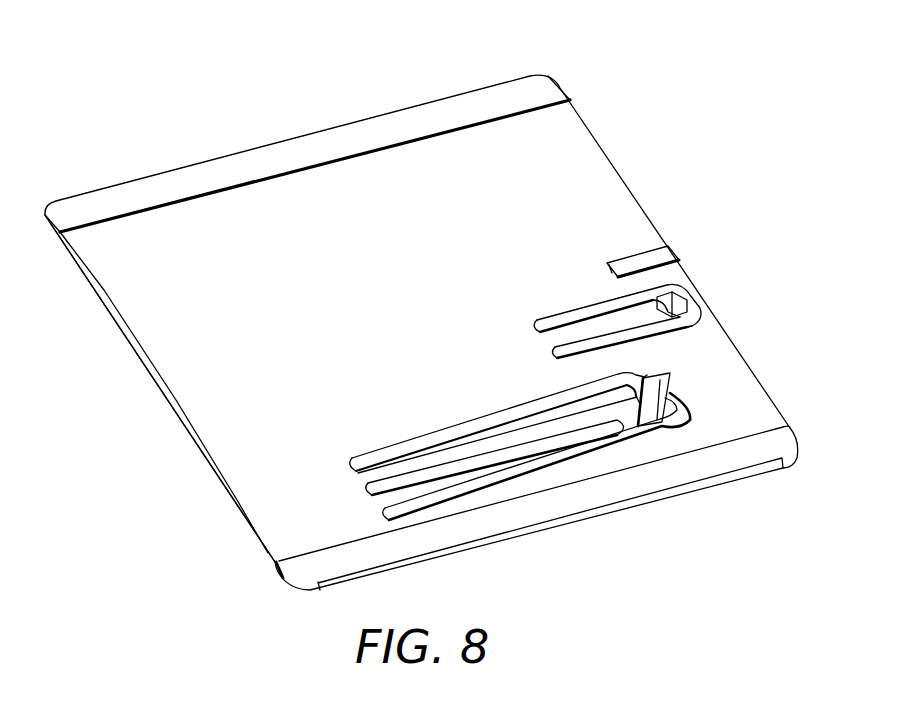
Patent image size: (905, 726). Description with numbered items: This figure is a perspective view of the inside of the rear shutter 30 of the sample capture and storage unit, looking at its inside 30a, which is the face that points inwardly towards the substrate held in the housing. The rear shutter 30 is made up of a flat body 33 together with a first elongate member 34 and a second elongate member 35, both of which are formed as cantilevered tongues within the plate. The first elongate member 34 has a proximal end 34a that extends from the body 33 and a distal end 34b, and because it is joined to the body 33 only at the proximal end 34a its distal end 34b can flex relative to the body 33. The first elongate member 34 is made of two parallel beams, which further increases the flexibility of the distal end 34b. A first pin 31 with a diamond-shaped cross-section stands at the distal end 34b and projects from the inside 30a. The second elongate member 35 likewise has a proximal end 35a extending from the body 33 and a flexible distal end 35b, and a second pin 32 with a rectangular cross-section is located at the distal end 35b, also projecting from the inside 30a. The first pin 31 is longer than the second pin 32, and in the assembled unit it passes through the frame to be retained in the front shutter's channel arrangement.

The rear shutter 30 is at (596, 132).
The inside 30a is at (623, 200).
The first pin 31 is at (677, 383).
The second pin 32 is at (682, 288).
The body 33 is at (160, 358).
The first elongate member 34 is at (522, 467).
The proximal end 34a is at (380, 505).
The distal end 34b is at (630, 452).
The second elongate member 35 is at (603, 323).
The proximal end 35a is at (560, 337).
The distal end 35b is at (683, 328).